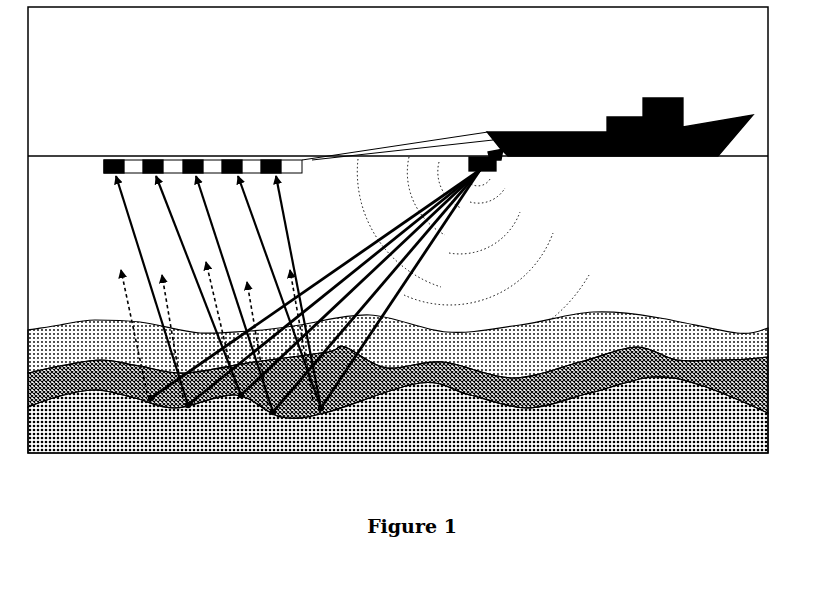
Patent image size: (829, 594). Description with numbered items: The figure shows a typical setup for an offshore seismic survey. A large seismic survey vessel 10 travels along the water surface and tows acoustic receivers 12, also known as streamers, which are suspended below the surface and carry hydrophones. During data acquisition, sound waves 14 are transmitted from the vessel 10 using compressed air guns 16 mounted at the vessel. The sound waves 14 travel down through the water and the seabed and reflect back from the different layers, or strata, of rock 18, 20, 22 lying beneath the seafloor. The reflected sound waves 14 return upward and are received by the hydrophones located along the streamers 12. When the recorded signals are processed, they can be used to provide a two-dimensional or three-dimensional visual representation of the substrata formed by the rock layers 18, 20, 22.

The seismic survey vessel 10 is at (688, 120).
The acoustic receivers 12 is at (157, 159).
The sound waves 14 is at (520, 211).
The compressed air guns 16 is at (469, 158).
The layer of rock 18 is at (587, 327).
The layer of rock 20 is at (625, 357).
The layer of rock 22 is at (662, 398).